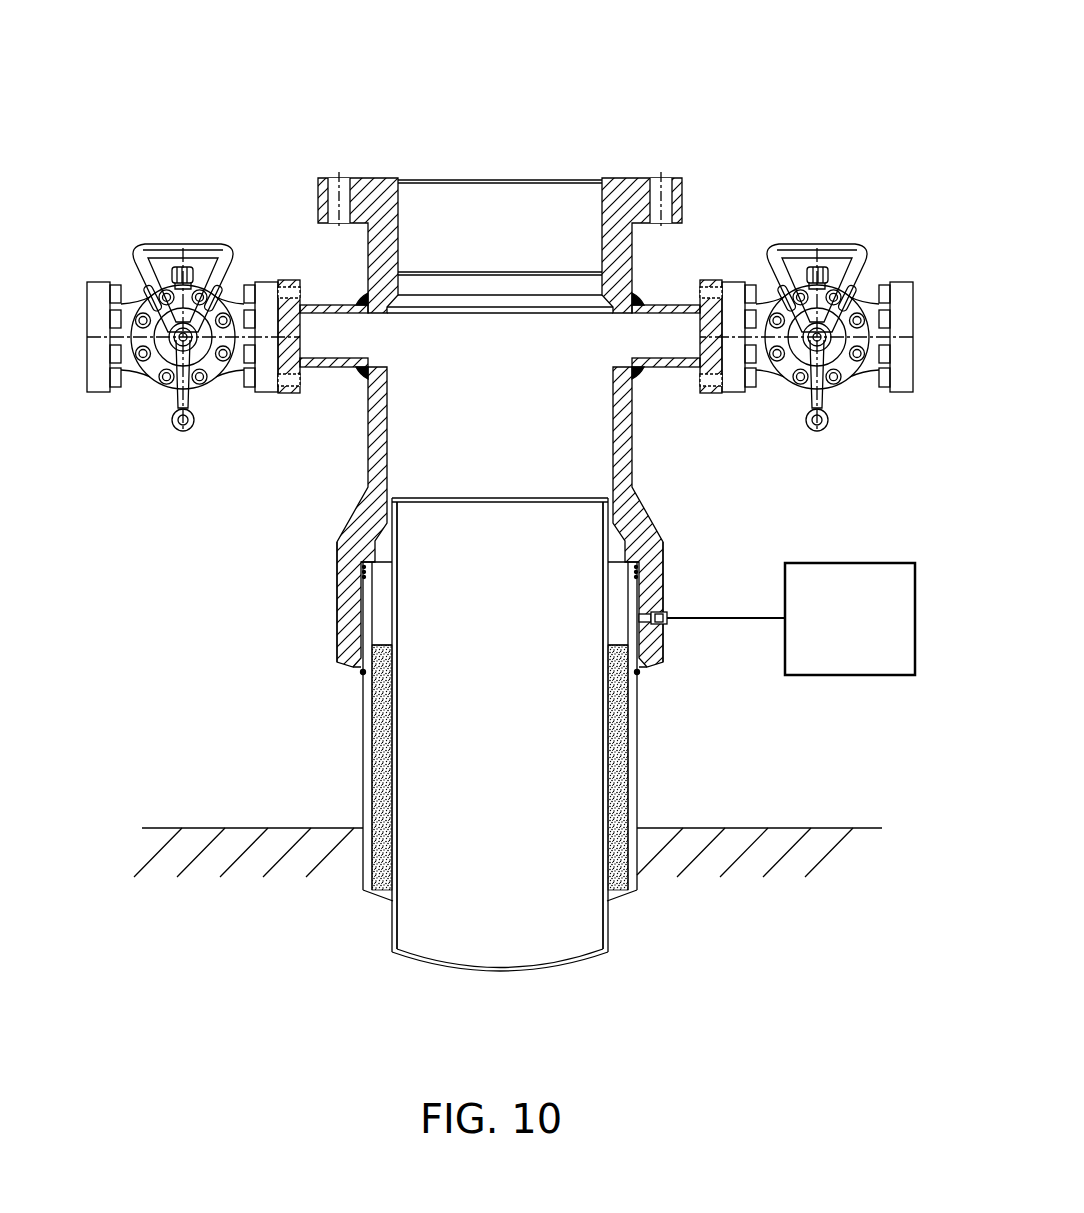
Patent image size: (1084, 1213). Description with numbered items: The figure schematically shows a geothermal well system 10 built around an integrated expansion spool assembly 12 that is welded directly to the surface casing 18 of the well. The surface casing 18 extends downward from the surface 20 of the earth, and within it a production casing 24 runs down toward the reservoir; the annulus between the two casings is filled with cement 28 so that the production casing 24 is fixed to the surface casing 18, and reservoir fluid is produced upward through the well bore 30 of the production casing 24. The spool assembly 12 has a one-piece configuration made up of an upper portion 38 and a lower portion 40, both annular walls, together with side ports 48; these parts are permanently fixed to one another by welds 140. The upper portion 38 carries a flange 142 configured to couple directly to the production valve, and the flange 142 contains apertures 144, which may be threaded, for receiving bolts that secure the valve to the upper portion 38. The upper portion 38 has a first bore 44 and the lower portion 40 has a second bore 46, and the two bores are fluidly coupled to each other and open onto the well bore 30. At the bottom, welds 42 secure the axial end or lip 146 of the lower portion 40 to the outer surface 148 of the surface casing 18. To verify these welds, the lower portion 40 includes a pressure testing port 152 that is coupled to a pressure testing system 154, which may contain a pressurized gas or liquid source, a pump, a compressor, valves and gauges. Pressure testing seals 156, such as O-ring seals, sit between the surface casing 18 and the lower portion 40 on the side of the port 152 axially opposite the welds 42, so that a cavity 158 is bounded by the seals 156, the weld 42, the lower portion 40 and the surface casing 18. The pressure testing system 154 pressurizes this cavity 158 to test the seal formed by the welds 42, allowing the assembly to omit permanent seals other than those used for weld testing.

The geothermal well system 10 is at (672, 44).
The integrated expansion spool assembly 12 is at (633, 462).
The surface casing 18 is at (637, 808).
The surface 20 is at (788, 828).
The production casing 24 is at (608, 922).
The cement 28 is at (618, 773).
The well bore 30 is at (420, 718).
The upper portion 38 is at (520, 221).
The lower portion 40 is at (306, 558).
The welds 42 is at (363, 685).
The first bore 44 is at (452, 210).
The second bore 46 is at (410, 452).
The side ports 48 is at (320, 305).
The welds 140 is at (364, 302).
The flange 142 is at (617, 198).
The apertures 144 is at (665, 193).
The lip 146 is at (361, 672).
The outer surface 148 is at (363, 788).
The pressure testing port 152 is at (650, 610).
The pressure testing system 154 is at (852, 675).
The pressure testing seals 156 is at (636, 576).
The cavity 158 is at (648, 630).